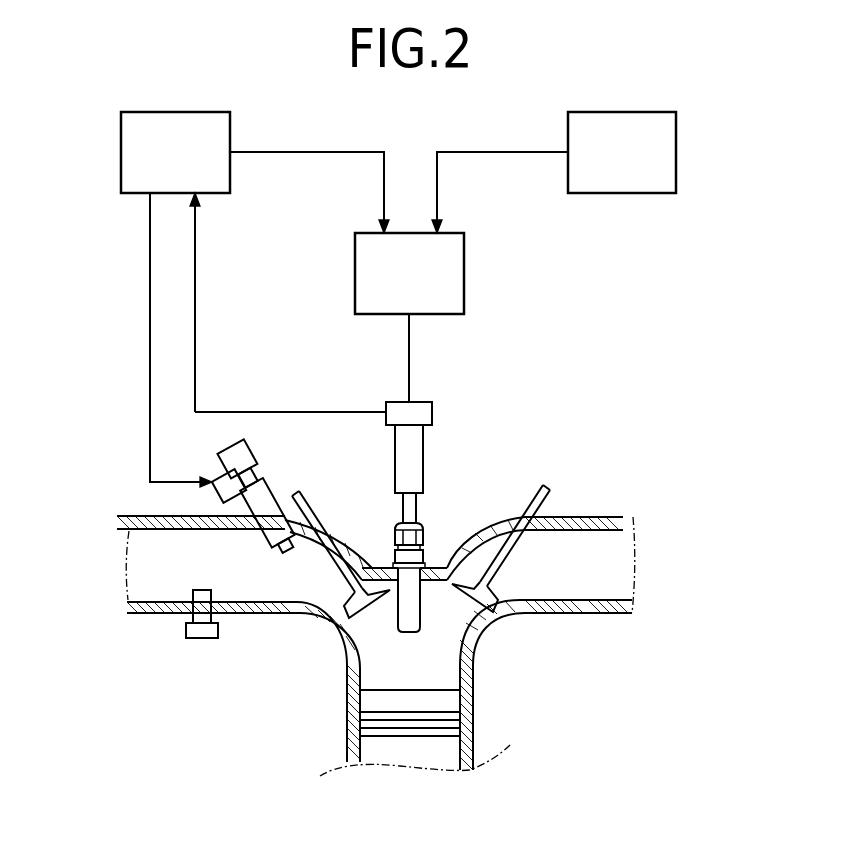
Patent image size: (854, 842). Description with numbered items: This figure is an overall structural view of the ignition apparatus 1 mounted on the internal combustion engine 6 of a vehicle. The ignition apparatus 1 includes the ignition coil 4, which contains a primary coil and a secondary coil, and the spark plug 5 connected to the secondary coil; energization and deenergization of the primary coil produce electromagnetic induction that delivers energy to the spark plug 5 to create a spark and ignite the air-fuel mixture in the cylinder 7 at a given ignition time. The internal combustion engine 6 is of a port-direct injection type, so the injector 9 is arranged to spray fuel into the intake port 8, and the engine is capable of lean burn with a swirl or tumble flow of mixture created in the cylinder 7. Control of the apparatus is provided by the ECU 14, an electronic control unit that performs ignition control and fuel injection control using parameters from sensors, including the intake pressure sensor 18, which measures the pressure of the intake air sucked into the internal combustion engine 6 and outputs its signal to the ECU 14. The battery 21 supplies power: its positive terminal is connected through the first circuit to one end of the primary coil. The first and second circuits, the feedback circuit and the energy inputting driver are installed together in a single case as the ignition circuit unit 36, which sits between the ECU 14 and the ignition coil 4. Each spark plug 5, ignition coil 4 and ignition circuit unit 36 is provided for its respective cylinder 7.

The ignition apparatus 1 is at (478, 229).
The ignition coil 4 is at (410, 462).
The spark plug 5 is at (418, 620).
The internal combustion engine 6 is at (305, 758).
The cylinder 7 is at (370, 674).
The intake port 8 is at (320, 578).
The injector 9 is at (267, 469).
The ECU 14 is at (133, 153).
The intake pressure sensor 18 is at (198, 640).
The battery 21 is at (660, 150).
The ignition circuit unit 36 is at (366, 272).